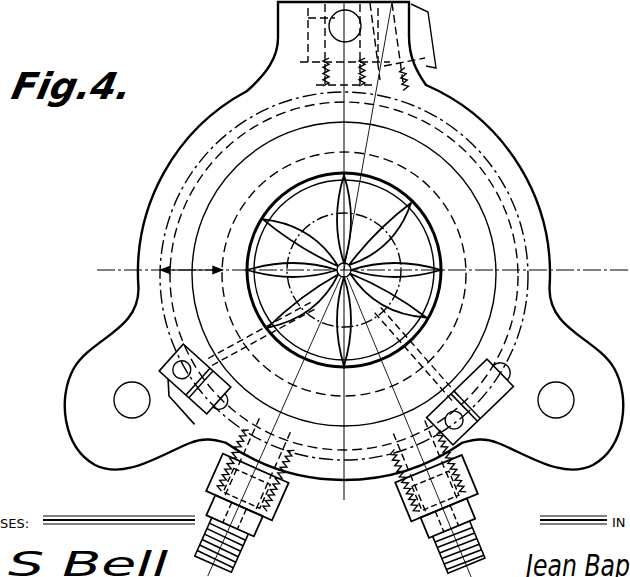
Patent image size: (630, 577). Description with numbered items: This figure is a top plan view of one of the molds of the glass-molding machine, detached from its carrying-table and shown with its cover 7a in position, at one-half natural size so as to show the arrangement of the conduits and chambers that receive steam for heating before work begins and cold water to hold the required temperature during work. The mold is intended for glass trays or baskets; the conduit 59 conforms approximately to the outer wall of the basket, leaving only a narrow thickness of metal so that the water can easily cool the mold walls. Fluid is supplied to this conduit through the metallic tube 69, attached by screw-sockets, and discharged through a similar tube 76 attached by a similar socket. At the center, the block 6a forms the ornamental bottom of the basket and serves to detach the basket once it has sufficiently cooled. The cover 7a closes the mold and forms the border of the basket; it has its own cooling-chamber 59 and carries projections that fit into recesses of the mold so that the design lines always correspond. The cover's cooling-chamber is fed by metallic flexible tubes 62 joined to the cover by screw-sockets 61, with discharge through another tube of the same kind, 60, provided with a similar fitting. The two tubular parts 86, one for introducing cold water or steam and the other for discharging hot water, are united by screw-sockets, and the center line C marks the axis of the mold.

The block 6a is at (277, 18).
The cover 7a is at (510, 128).
The metallic tube 69 is at (325, 72).
The discharge tube 76 is at (430, 69).
The center line C is at (354, 251).
The conduit 59 is at (191, 259).
The tubular parts 86 is at (181, 352).
The screw-sockets 61 is at (282, 502).
The discharge tube 60 is at (236, 556).
The metallic flexible tubes 62 is at (476, 547).